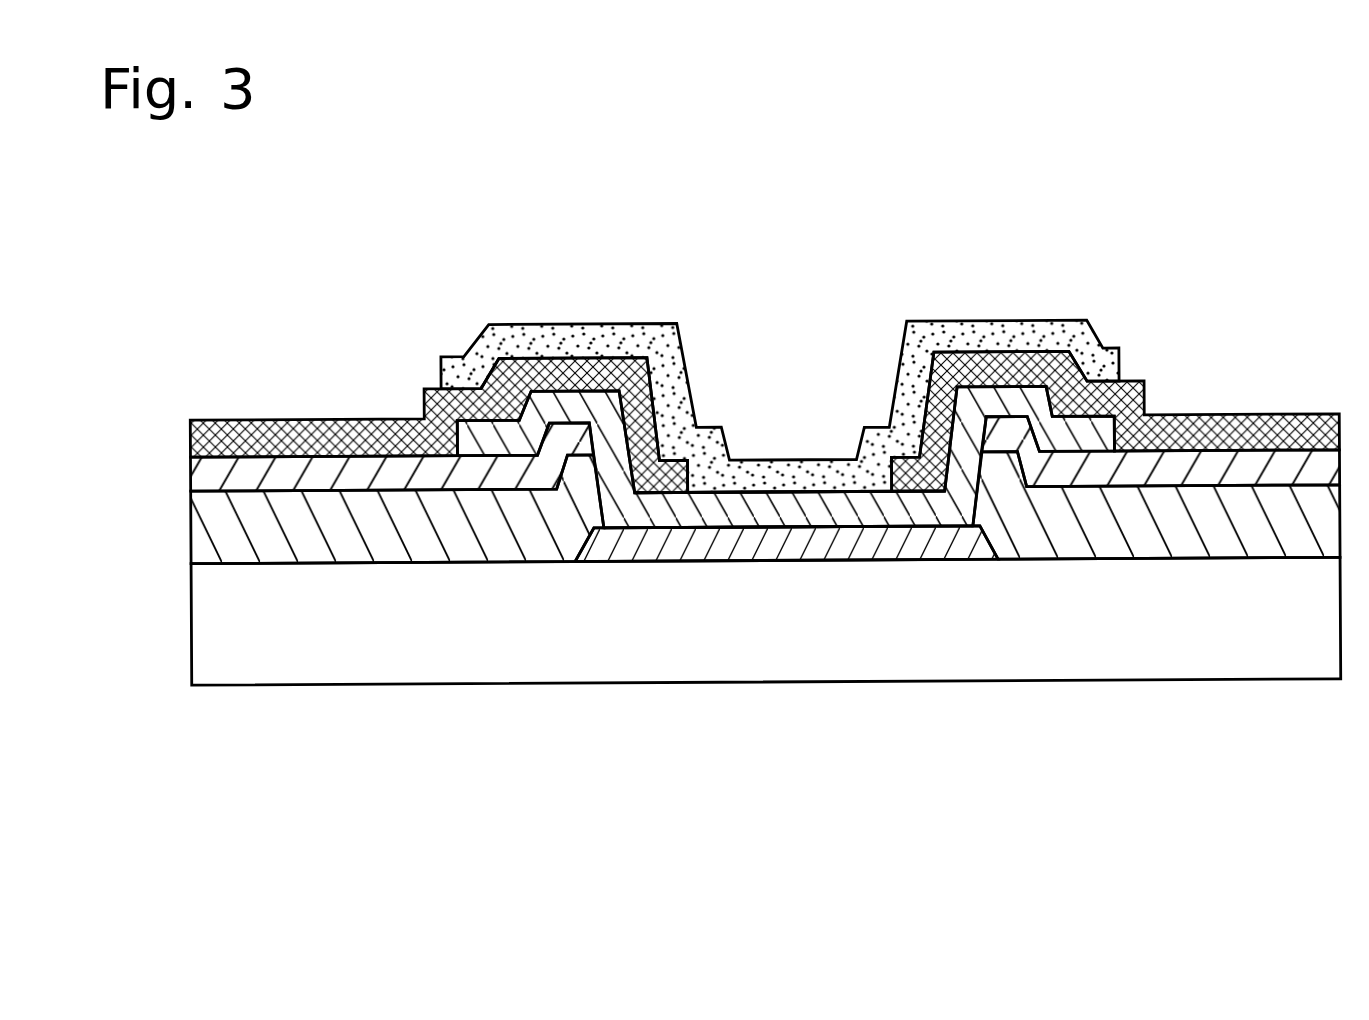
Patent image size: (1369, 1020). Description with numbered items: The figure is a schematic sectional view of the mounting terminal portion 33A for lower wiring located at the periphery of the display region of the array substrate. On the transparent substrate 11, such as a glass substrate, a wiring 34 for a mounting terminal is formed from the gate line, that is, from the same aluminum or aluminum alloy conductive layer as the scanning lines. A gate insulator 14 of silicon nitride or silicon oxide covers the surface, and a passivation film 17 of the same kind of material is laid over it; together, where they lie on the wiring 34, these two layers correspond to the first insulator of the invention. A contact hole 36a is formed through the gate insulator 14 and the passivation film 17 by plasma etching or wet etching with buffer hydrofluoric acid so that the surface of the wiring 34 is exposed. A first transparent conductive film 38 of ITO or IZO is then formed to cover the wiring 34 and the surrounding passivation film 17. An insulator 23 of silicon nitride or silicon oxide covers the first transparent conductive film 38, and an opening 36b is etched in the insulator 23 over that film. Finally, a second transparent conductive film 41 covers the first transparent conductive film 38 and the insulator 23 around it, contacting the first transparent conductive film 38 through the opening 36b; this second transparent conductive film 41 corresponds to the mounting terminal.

The mounting terminal portion for lower wiring 33A is at (276, 241).
The transparent substrate 11 is at (1256, 655).
The gate insulator 14 is at (325, 537).
The passivation film 17 is at (244, 474).
The insulator 23 is at (341, 440).
The wiring for a mounting terminal 34 is at (706, 548).
The contact hole 36a is at (764, 518).
The opening 36b is at (817, 490).
The first transparent conductive film 38 is at (904, 515).
The second transparent conductive film 41 is at (597, 340).